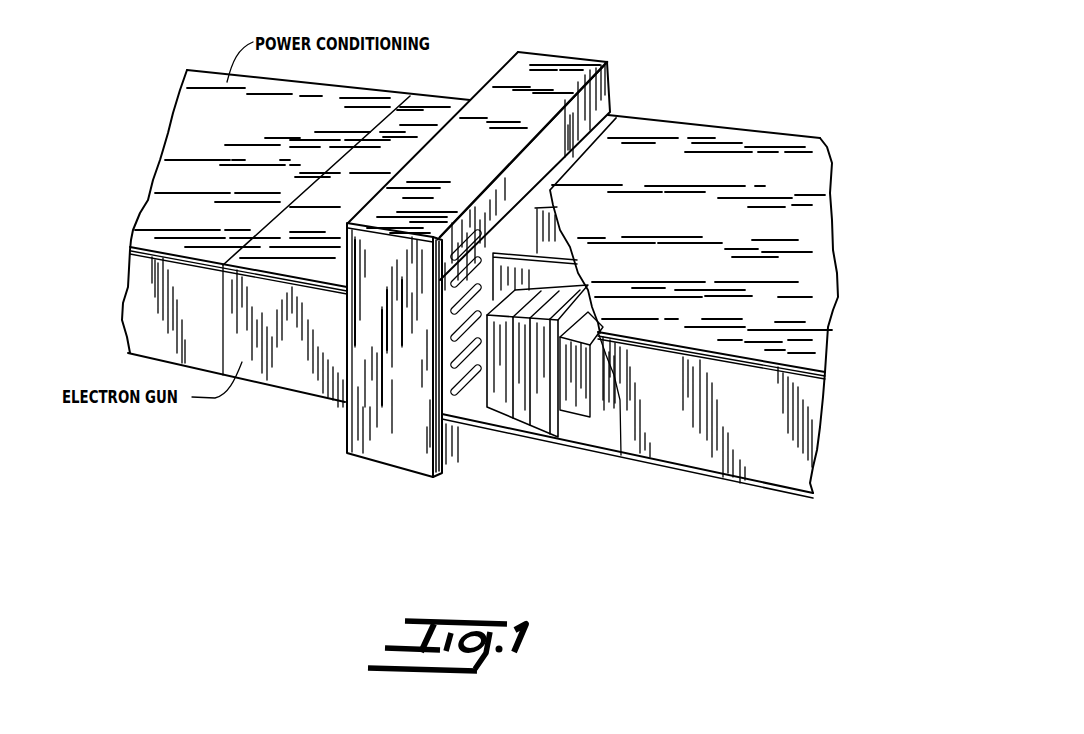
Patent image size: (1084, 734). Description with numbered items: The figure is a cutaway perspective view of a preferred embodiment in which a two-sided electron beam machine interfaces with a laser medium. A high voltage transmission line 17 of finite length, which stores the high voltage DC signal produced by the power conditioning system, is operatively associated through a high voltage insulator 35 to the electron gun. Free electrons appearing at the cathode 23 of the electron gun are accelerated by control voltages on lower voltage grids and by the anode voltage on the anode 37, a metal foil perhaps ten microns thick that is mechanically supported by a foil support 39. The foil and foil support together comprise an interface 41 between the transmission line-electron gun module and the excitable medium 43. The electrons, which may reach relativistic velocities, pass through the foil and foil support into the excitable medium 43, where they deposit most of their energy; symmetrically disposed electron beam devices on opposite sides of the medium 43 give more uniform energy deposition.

The excitable medium 43 is at (550, 62).
The interface 41 is at (340, 403).
The foil support 39 is at (473, 398).
The anode 37 is at (460, 393).
The transmission line 17 is at (600, 393).
The high voltage insulator 35 is at (532, 397).
The cathode 23 is at (502, 397).